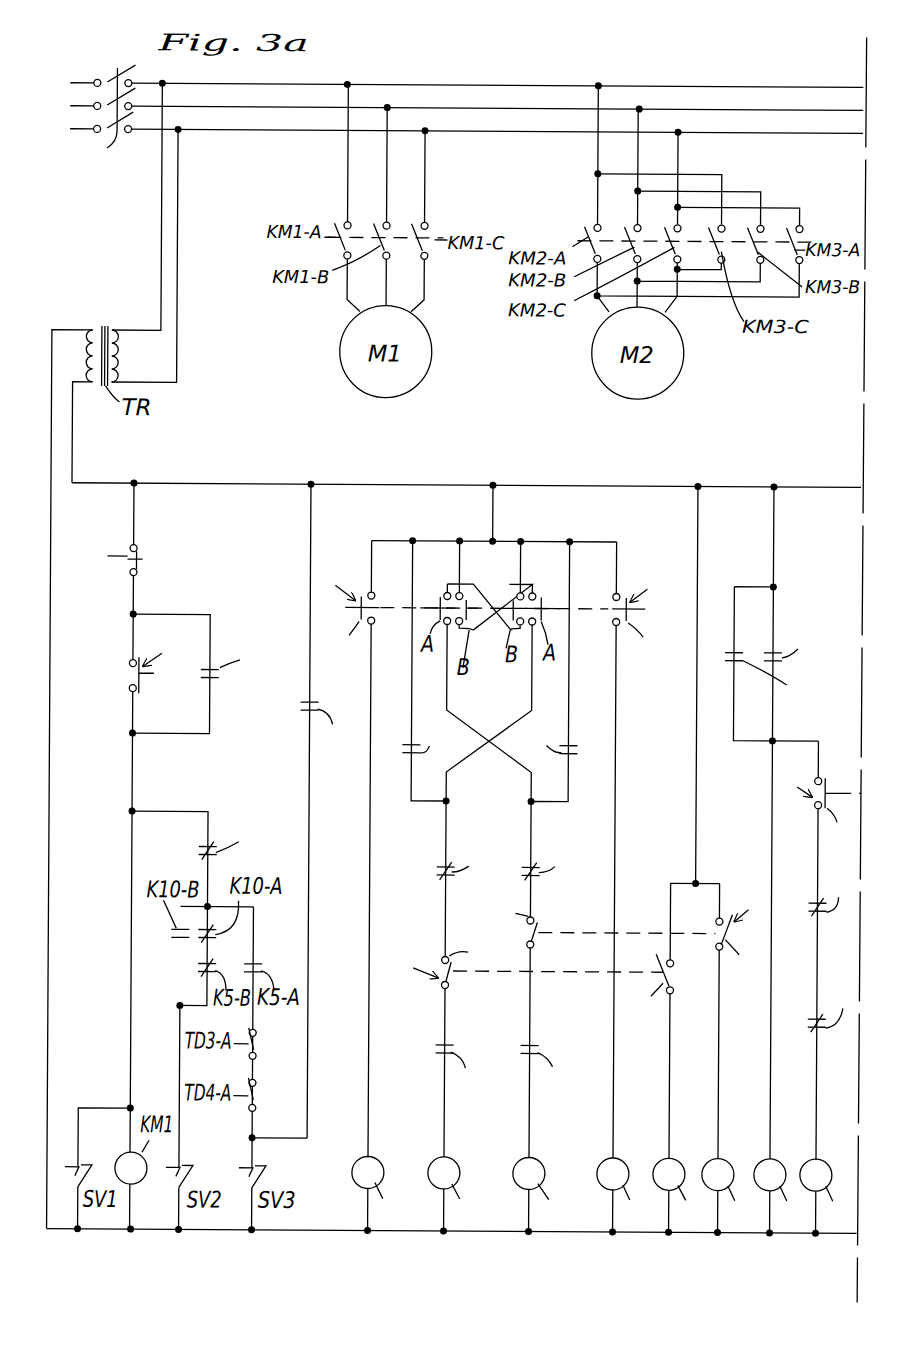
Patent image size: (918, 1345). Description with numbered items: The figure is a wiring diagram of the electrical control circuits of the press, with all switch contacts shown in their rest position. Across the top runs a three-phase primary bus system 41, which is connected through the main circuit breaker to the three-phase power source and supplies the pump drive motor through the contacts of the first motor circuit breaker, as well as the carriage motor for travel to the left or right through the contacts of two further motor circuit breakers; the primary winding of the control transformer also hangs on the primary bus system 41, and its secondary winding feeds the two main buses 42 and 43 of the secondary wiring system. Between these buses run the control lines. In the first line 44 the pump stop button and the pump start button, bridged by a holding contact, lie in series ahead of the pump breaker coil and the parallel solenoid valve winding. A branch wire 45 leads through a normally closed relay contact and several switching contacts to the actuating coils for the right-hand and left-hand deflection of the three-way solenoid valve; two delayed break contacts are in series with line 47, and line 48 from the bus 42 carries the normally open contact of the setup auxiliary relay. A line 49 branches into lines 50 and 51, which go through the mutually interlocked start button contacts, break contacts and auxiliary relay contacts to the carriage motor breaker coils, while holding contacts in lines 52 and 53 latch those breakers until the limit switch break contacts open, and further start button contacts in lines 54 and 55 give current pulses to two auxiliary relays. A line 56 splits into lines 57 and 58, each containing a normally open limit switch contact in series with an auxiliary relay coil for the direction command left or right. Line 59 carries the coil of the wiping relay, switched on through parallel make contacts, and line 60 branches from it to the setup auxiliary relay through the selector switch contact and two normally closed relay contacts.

The three-phase primary bus system 41 is at (504, 133).
The main bus of the secondary wiring system 42 is at (239, 484).
The main bus of the secondary wiring system 43 is at (52, 465).
The first line 44 is at (134, 506).
The branch wire 45 is at (169, 813).
The line 47 is at (259, 1129).
The line 48 is at (311, 513).
The line 49 is at (494, 514).
The line 50 is at (448, 1137).
The line 51 is at (533, 1134).
The line 52 is at (411, 674).
The line 53 is at (570, 682).
The line 54 is at (617, 1134).
The line 55 is at (372, 1134).
The line 56 is at (699, 534).
The line 57 is at (673, 1134).
The line 58 is at (722, 1134).
The line 59 is at (775, 534).
The line 60 is at (820, 1134).